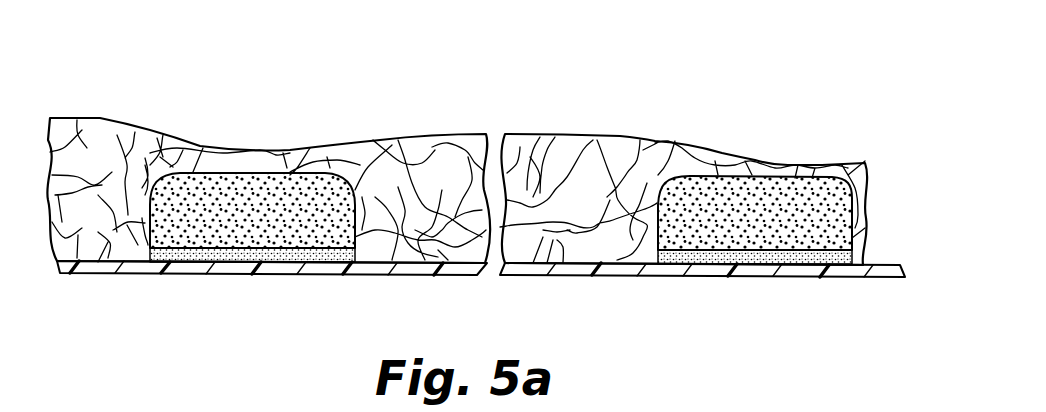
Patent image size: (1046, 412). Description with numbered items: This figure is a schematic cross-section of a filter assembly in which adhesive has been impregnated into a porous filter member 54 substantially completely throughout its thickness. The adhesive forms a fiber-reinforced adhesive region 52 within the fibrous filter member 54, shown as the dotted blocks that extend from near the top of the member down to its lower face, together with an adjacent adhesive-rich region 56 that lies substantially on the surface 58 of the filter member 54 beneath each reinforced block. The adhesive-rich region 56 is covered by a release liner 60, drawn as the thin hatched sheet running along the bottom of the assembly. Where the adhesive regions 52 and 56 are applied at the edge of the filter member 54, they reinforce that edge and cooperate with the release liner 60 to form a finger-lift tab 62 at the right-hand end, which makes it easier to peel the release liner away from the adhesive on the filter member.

The fiber-reinforced adhesive region 52 is at (263, 185).
The filter member 54 is at (106, 134).
The adhesive-rich region 56 is at (230, 262).
The surface 58 is at (104, 263).
The release liner 60 is at (452, 274).
The finger-lift tab 62 is at (890, 265).